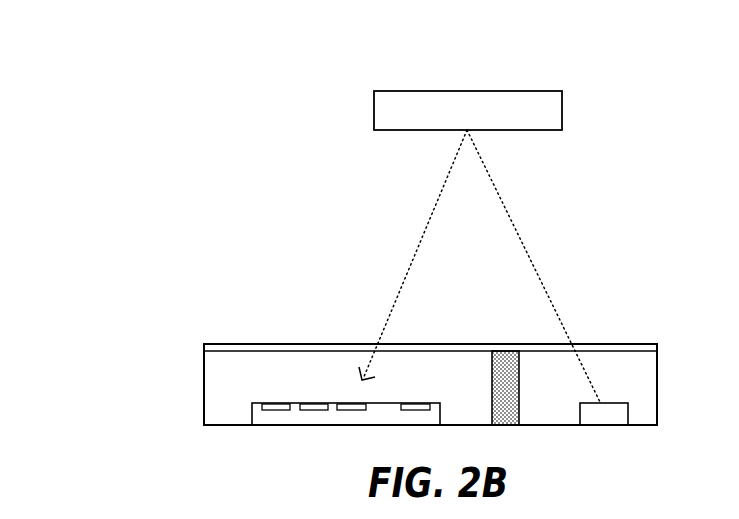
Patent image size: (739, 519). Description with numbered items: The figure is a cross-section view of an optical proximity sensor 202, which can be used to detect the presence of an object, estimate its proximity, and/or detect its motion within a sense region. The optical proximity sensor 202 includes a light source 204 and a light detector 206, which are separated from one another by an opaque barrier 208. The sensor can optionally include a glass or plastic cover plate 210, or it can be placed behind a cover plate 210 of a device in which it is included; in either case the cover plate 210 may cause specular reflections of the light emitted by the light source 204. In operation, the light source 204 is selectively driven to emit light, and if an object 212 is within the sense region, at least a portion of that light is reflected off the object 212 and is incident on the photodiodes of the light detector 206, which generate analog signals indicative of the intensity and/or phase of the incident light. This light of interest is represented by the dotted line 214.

The optical proximity sensor 202 is at (351, 338).
The light source 204 is at (637, 369).
The light detector 206 is at (310, 368).
The opaque barrier 208 is at (484, 369).
The cover plate 210 is at (430, 328).
The object 212 is at (468, 91).
The dotted line 214 is at (479, 266).